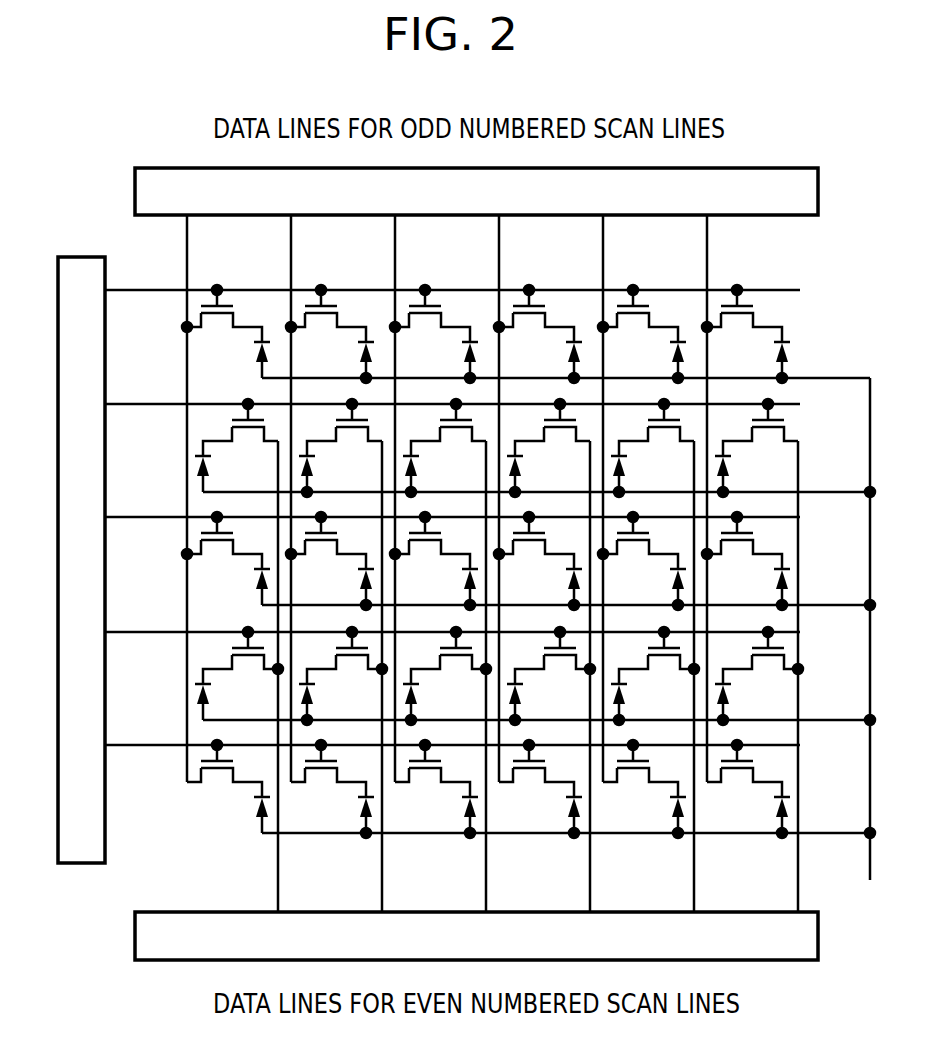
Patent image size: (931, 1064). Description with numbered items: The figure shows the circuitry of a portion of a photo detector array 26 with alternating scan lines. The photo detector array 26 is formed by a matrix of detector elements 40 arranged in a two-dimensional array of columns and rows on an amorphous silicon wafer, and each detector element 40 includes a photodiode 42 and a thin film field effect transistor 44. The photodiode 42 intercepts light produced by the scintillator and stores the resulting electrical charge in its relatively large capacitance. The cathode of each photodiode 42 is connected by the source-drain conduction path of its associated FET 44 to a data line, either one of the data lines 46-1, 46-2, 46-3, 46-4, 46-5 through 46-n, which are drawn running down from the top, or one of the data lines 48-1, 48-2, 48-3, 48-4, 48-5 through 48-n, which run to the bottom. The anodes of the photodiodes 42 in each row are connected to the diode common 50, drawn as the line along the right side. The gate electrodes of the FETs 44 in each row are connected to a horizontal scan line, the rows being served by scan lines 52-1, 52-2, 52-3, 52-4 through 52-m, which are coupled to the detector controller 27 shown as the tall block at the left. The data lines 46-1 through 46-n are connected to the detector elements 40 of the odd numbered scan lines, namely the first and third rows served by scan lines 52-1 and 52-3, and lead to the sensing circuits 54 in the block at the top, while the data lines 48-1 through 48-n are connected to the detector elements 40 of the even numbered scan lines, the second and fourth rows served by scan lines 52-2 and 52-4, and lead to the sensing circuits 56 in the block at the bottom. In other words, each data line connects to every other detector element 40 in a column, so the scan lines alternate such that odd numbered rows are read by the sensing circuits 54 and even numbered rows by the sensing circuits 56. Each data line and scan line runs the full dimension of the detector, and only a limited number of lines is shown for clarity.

The photo detector array 26 is at (98, 203).
The detector controller 27 is at (78, 263).
The detector element 40 is at (217, 429).
The photodiode 42 is at (262, 354).
The thin film field effect transistor 44 is at (202, 308).
The data line 46-1 is at (190, 246).
The data line 46-2 is at (294, 246).
The data line 46-3 is at (398, 246).
The data line 46-4 is at (502, 246).
The data line 46-5 is at (606, 246).
The data line 46-n is at (710, 246).
The data line 48-1 is at (281, 872).
The data line 48-2 is at (385, 872).
The data line 48-3 is at (489, 872).
The data line 48-4 is at (593, 872).
The data line 48-5 is at (697, 872).
The data line 48-n is at (800, 898).
The diode common 50 is at (869, 648).
The scan line 52-1 is at (148, 290).
The scan line 52-2 is at (148, 404).
The scan line 52-3 is at (148, 517).
The scan line 52-4 is at (148, 632).
The scan line 52-m is at (148, 745).
The sensing circuits 54 is at (155, 175).
The sensing circuits 56 is at (160, 960).